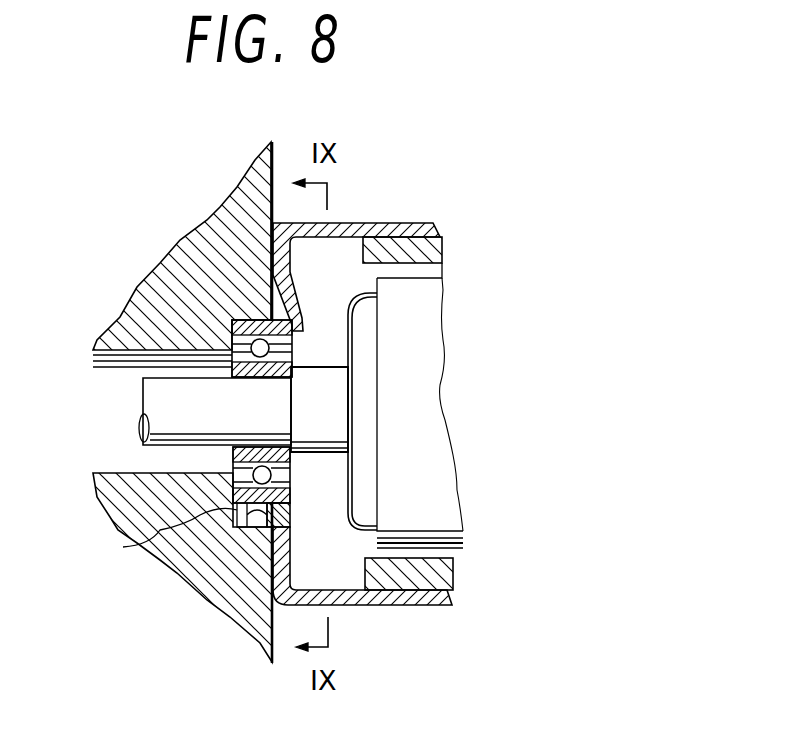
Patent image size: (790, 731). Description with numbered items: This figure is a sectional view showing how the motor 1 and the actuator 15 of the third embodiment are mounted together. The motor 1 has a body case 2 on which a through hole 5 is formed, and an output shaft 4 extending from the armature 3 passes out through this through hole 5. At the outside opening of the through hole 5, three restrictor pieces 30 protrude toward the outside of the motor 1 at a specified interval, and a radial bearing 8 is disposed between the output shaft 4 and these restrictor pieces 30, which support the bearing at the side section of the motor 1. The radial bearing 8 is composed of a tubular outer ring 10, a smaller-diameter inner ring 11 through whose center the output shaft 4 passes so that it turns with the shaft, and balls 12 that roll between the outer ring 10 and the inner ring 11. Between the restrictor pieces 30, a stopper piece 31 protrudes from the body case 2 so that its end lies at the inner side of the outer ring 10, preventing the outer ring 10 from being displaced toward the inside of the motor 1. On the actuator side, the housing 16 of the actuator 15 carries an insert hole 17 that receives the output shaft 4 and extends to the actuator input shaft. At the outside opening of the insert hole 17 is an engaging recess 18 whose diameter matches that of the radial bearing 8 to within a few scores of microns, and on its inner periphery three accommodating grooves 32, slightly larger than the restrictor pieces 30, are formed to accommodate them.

The motor 1 is at (399, 185).
The body case 2 is at (413, 225).
The armature 3 is at (435, 373).
The output shaft 4 is at (155, 402).
The through hole 5 is at (290, 510).
The radial bearing 8 is at (233, 457).
The outer ring 10 is at (292, 332).
The inner ring 11 is at (292, 368).
The balls 12 is at (292, 348).
The actuator 15 is at (132, 207).
The housing 16 is at (230, 200).
The insert hole 17 is at (118, 470).
The engaging recess 18 is at (237, 317).
The restrictor pieces 30 is at (255, 560).
The stopper piece 31 is at (300, 303).
The accommodating grooves 32 is at (160, 538).